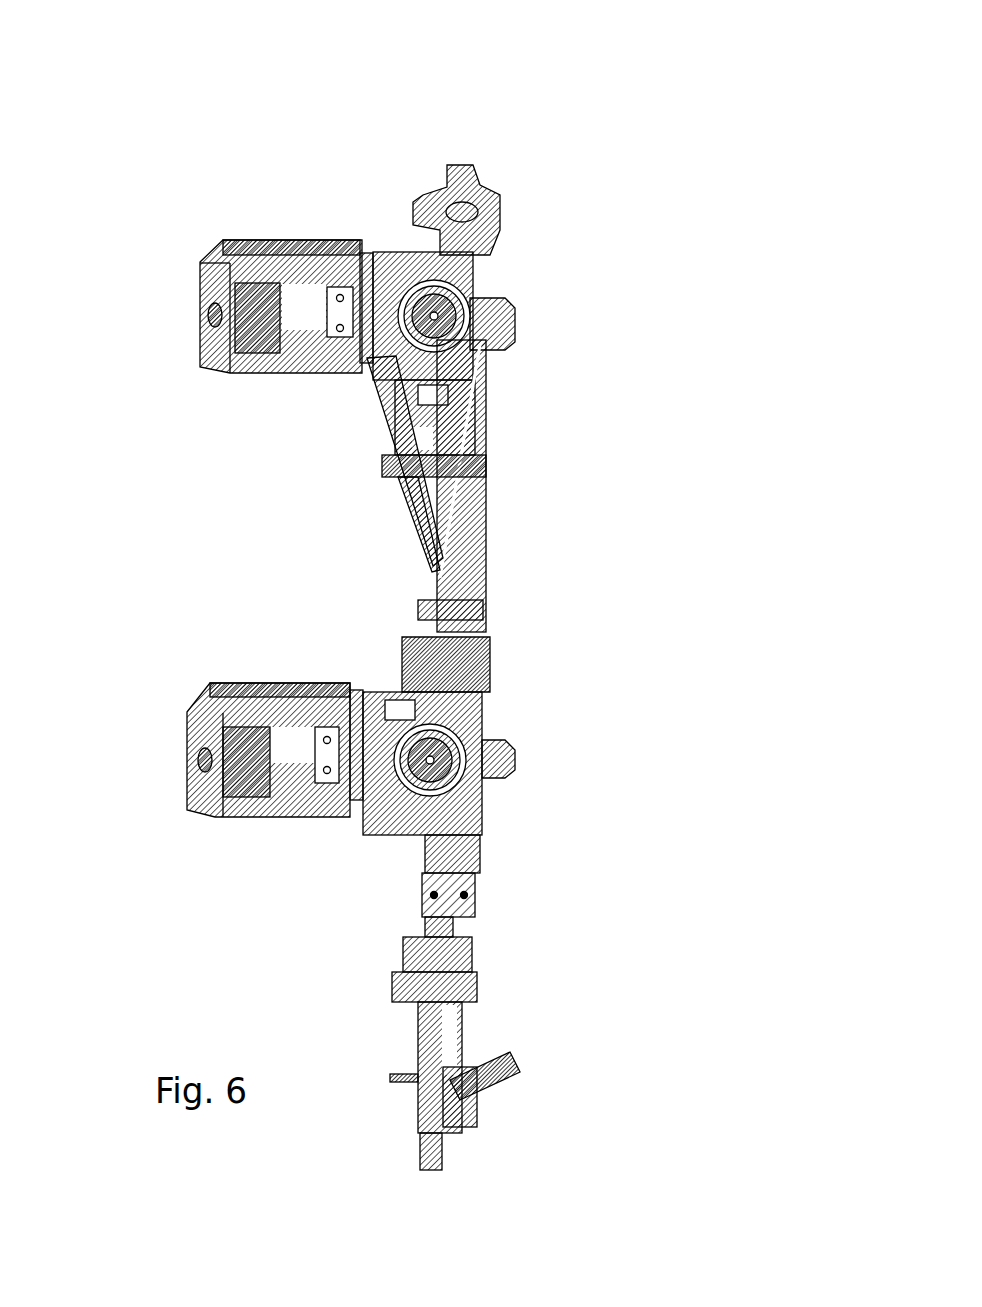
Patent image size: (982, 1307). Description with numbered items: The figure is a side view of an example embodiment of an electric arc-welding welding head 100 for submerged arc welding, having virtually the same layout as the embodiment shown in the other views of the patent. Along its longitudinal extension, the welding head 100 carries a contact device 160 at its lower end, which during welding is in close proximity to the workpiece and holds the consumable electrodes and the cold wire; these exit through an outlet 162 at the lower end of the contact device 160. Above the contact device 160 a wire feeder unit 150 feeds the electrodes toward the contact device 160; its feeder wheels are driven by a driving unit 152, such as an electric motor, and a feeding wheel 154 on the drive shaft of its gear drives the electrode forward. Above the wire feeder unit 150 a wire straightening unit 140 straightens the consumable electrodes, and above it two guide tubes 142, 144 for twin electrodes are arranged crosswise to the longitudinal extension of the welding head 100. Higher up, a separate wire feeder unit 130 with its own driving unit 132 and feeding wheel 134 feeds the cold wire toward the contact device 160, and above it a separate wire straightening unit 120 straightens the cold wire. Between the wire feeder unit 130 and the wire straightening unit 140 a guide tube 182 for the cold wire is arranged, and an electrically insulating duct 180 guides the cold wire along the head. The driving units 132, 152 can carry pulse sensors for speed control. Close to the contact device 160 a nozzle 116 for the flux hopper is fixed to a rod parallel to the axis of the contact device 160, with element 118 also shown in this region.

The arc-welding welding head 100 is at (551, 125).
The nozzle 116 is at (487, 1063).
The lower actuator 118 is at (460, 1045).
The wire straightening unit 120 is at (493, 200).
The wire feeder unit 130 is at (517, 352).
The driving unit 132 is at (268, 292).
The feeding wheel 134 is at (482, 311).
The wire straightening unit 140 is at (405, 652).
The guide tube 142 is at (393, 412).
The guide tube 144 is at (410, 492).
The wire feeder unit 150 is at (531, 768).
The driving unit 152 is at (243, 705).
The feeding wheel 154 is at (440, 753).
The contact device 160 is at (368, 403).
The outlet 162 is at (433, 1160).
The electrically insulating duct 180 is at (455, 497).
The guide tube 182 is at (482, 422).